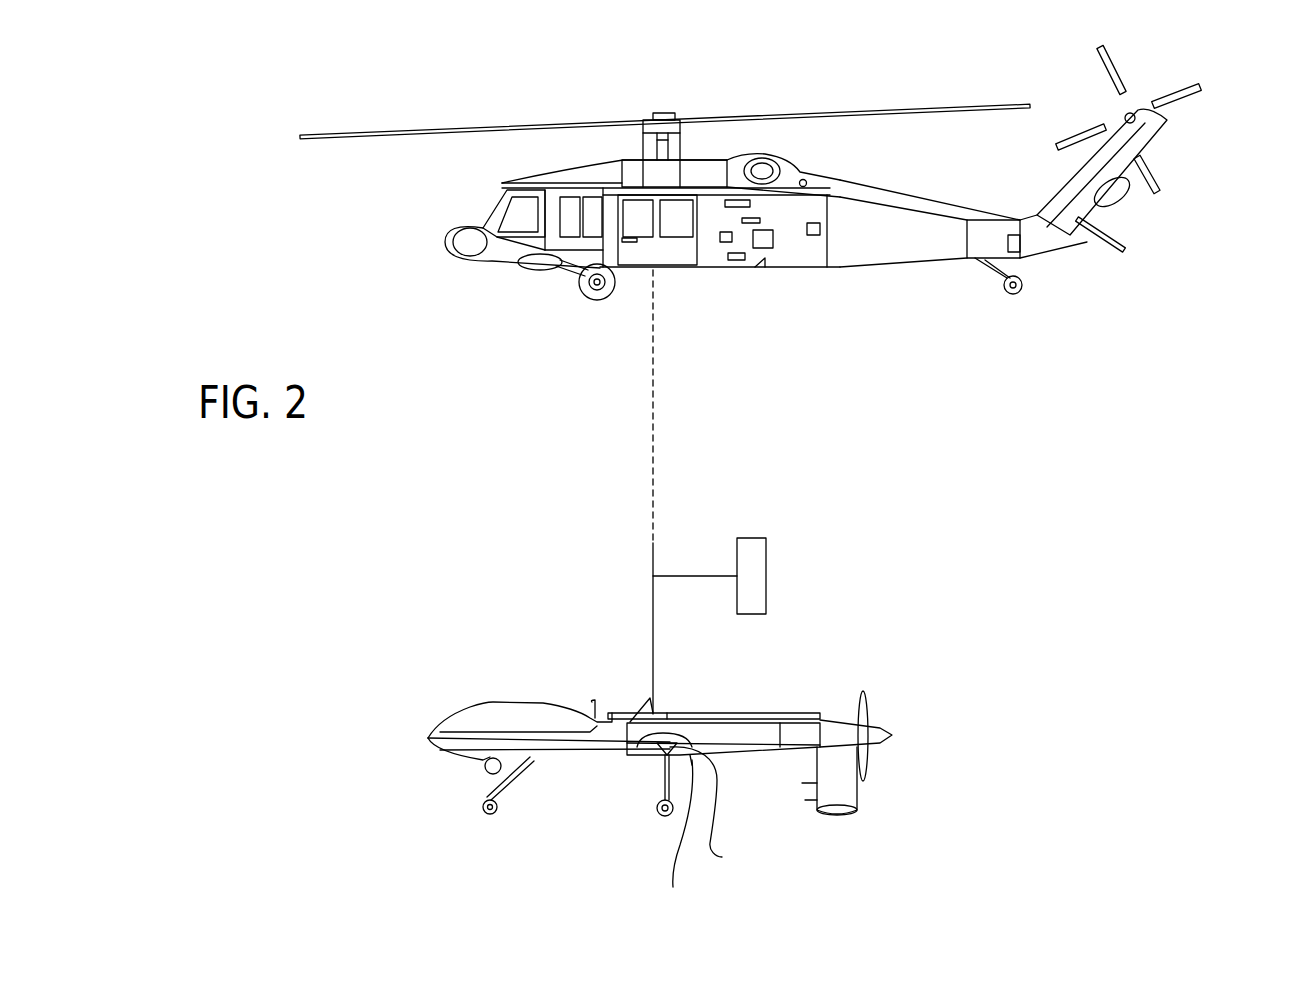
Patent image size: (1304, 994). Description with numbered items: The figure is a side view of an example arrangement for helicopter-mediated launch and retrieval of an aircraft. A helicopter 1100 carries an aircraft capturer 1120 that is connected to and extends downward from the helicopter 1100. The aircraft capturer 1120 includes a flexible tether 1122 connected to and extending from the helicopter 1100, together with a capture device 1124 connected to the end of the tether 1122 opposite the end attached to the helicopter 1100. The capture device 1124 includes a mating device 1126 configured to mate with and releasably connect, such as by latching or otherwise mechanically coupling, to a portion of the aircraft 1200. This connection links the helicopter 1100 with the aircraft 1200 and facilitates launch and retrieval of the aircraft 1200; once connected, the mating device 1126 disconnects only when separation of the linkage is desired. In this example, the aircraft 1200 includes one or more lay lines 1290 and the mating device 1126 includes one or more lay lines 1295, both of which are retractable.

The helicopter 1100 is at (1187, 217).
The aircraft capturer 1120 is at (627, 492).
The flexible tether 1122 is at (653, 412).
The capture device 1124 is at (653, 642).
The mating device 1126 is at (645, 757).
The aircraft 1200 is at (713, 789).
The lay lines 1290 is at (718, 806).
The lay lines 1295 is at (677, 871).